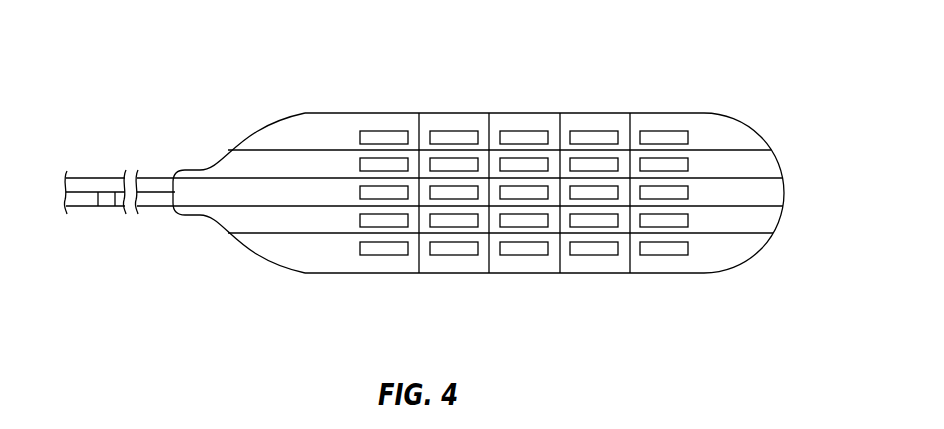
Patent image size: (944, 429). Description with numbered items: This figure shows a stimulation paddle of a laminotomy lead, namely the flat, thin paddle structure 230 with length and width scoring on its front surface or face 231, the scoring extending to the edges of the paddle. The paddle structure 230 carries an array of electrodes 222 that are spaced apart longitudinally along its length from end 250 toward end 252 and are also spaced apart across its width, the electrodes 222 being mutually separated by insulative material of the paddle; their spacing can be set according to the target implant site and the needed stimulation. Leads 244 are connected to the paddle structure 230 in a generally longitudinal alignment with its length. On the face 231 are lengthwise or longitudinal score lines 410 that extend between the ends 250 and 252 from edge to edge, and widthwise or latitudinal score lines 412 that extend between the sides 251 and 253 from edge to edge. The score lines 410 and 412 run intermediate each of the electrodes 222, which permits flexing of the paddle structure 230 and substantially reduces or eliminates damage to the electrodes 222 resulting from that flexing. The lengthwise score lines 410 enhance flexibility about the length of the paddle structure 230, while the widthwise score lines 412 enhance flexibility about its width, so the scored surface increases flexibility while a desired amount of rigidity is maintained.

The paddle structure 230 is at (750, 62).
The front surface or face 231 is at (271, 132).
The leads 244 is at (82, 166).
The end 250 is at (731, 306).
The side 251 is at (453, 112).
The end 252 is at (209, 270).
The side 253 is at (457, 273).
The electrodes 222 is at (597, 131).
The lengthwise or longitudinal score lines 410 is at (758, 150).
The widthwise or latitudinal score lines 412 is at (419, 258).